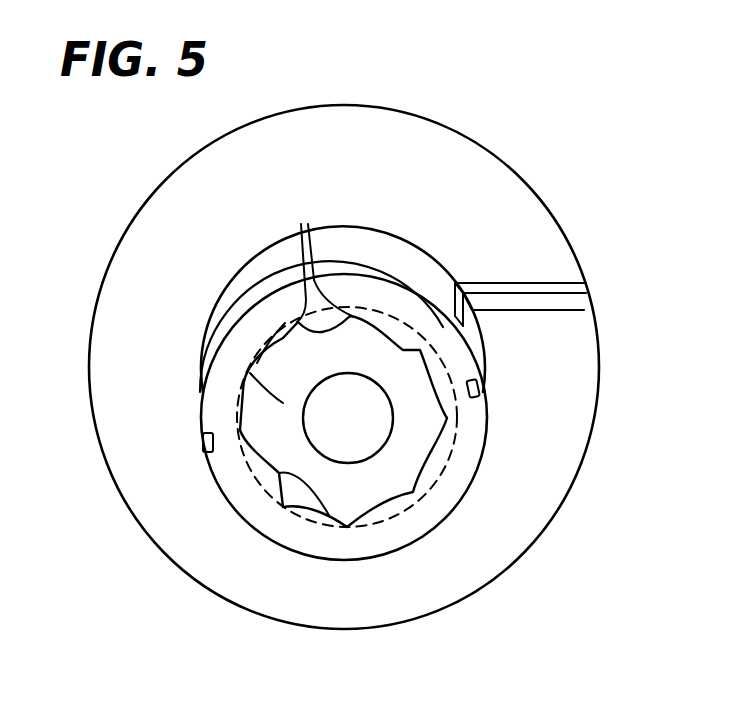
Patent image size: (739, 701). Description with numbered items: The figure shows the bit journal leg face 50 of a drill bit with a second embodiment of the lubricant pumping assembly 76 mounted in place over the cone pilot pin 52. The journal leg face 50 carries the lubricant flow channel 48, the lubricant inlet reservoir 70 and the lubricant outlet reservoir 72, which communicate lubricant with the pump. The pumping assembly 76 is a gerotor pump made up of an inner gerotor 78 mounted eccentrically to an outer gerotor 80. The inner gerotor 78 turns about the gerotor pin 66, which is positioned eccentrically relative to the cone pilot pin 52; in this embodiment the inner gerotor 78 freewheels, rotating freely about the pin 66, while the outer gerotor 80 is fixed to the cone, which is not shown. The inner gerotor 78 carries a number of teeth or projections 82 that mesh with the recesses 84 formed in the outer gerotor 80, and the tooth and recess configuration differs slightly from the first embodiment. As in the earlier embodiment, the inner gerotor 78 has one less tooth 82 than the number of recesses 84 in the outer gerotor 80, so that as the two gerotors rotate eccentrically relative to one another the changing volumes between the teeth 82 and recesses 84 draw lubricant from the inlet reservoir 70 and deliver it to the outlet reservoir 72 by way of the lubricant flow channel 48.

The bit journal leg face 50 is at (378, 157).
The cone pilot pin 52 is at (244, 266).
The lubricant flow channel 48 is at (580, 303).
The lubricant outlet reservoir 72 is at (394, 330).
The recesses 84 is at (317, 257).
The gerotor pin 66 is at (364, 428).
The lubricant inlet reservoir 70 is at (386, 497).
The inner gerotor 78 is at (432, 422).
The teeth or projections 82 is at (300, 339).
The outer gerotor 80 is at (236, 472).
The lubricant pumping assembly 76 is at (361, 567).